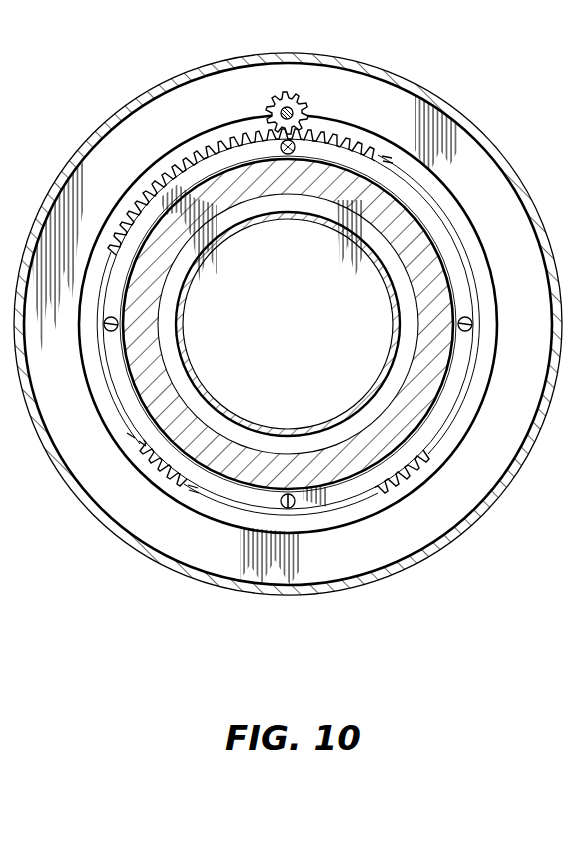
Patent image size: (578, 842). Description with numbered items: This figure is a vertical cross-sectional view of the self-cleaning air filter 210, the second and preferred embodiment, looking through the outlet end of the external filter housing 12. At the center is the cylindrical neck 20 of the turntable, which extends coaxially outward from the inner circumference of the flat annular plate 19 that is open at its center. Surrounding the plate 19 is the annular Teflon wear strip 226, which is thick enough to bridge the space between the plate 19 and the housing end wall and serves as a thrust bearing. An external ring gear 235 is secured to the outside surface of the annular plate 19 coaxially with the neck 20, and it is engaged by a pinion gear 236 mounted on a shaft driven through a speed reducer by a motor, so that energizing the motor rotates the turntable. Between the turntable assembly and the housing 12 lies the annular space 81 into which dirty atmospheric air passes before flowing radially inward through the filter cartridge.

The self-cleaning air filter 210 is at (427, 74).
The filter housing 12 is at (485, 132).
The annular space 81 is at (498, 203).
The ring gear 235 is at (340, 153).
The pinion gear 236 is at (296, 97).
The annular Teflon wear strip 226 is at (210, 200).
The annular plate 19 is at (327, 127).
The cylindrical neck 20 is at (203, 385).